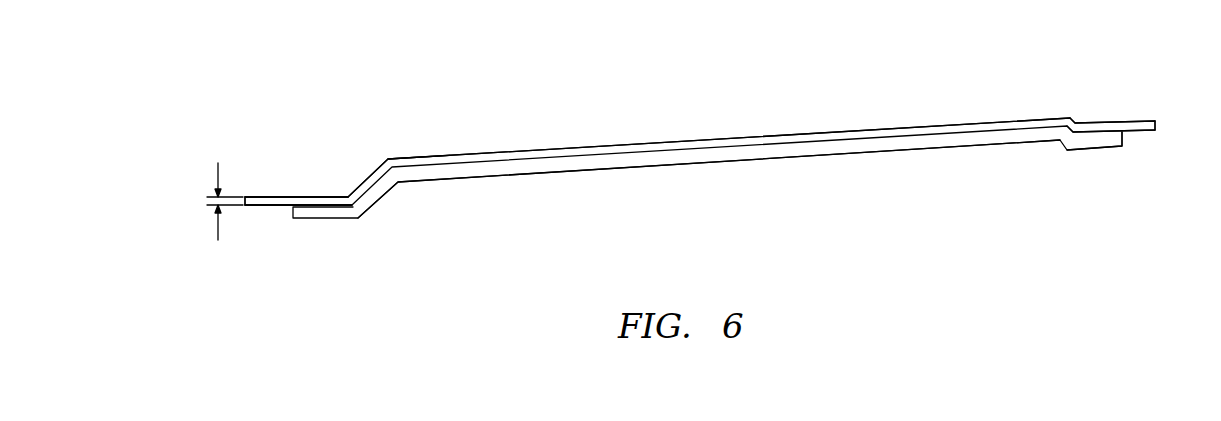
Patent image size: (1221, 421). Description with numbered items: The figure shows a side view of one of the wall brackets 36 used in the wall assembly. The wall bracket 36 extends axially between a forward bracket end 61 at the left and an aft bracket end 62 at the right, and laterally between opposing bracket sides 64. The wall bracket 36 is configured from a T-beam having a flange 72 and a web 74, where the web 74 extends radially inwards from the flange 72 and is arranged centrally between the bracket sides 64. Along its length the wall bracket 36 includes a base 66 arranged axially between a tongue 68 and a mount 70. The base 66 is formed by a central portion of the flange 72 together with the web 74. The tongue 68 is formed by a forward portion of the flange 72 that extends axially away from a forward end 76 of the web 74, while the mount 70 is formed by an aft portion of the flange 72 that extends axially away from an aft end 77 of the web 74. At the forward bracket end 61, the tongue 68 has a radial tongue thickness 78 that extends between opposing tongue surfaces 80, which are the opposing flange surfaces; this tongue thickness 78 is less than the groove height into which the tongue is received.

The wall bracket 36 is at (231, 74).
The forward bracket end 61 is at (247, 207).
The aft bracket end 62 is at (1158, 131).
The bracket sides 64 is at (982, 128).
The base 66 is at (703, 132).
The tongue 68 is at (270, 189).
The mount 70 is at (1145, 113).
The flange 72 is at (442, 155).
The web 74 is at (448, 180).
The forward end of the web 76 is at (284, 214).
The aft end of the web 77 is at (1128, 143).
The tongue thickness 78 is at (218, 240).
The tongue surfaces 80 is at (287, 195).